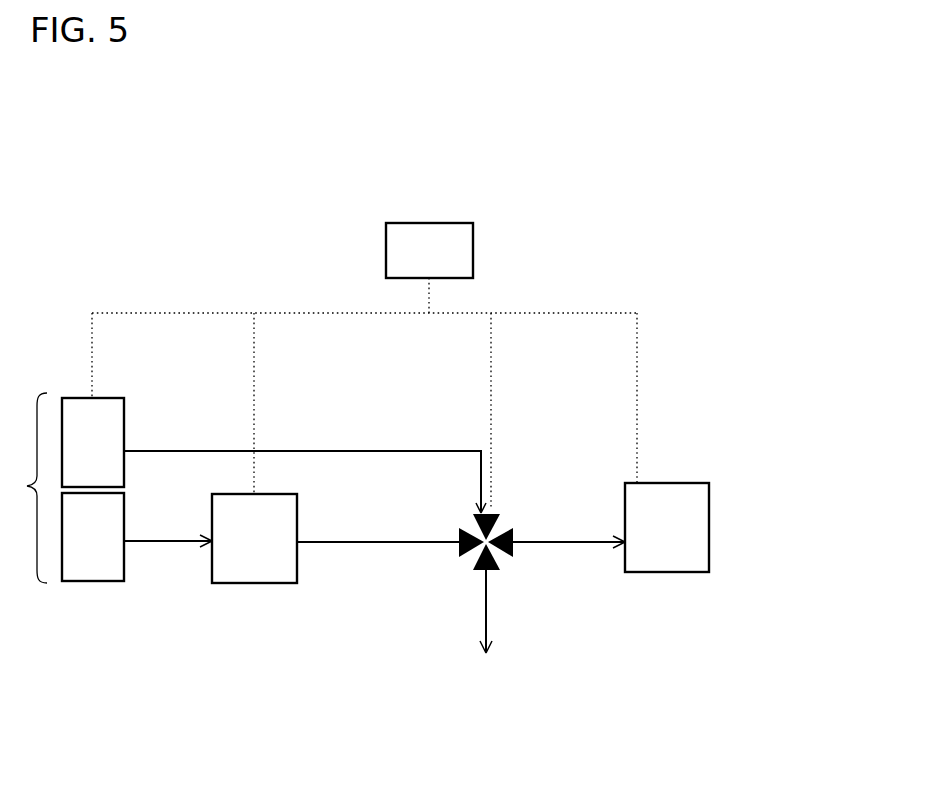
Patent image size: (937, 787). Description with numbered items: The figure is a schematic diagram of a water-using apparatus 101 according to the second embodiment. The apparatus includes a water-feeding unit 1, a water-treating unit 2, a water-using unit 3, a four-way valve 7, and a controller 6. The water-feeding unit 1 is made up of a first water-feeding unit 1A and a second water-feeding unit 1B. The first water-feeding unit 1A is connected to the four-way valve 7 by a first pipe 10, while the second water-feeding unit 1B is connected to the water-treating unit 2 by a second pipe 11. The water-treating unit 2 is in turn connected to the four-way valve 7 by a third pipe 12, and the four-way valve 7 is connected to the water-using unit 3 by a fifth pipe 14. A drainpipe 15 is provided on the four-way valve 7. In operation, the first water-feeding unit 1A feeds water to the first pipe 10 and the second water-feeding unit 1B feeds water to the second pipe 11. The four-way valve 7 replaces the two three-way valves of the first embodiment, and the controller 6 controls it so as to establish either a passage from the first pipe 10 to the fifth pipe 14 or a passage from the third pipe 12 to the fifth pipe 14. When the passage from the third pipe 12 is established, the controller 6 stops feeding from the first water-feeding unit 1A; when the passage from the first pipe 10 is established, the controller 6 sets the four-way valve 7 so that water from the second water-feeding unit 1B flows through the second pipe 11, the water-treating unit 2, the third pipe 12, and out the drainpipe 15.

The water-using apparatus 101 is at (676, 250).
The water-feeding unit 1 is at (66, 488).
The first water-feeding unit 1A is at (93, 442).
The second water-feeding unit 1B is at (93, 537).
The water-treating unit 2 is at (254, 538).
The water-using unit 3 is at (667, 527).
The controller 6 is at (364, 365).
The four-way valve 7 is at (505, 516).
The first pipe 10 is at (166, 450).
The second pipe 11 is at (163, 542).
The third pipe 12 is at (365, 545).
The fifth pipe 14 is at (572, 545).
The drainpipe 15 is at (484, 606).